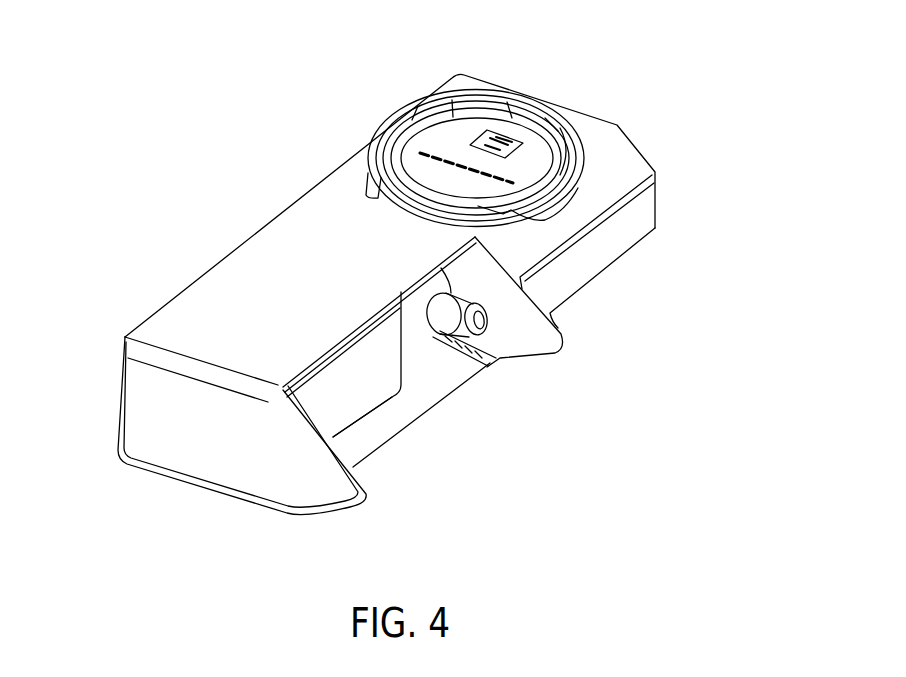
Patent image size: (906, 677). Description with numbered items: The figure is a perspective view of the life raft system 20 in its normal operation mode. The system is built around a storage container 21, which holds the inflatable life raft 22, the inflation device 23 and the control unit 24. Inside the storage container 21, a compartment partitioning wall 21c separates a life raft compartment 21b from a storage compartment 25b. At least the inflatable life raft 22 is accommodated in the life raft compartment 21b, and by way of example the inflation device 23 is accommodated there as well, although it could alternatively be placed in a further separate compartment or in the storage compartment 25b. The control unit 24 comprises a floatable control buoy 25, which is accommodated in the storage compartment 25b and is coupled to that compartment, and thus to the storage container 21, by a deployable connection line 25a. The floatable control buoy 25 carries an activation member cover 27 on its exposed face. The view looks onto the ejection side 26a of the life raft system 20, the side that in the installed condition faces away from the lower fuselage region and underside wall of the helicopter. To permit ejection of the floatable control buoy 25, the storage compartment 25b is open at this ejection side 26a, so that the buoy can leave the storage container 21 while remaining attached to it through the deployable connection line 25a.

The life raft system 20 is at (230, 37).
The storage container 21 is at (222, 298).
The life raft compartment 21b is at (428, 396).
The compartment partitioning wall 21c is at (515, 333).
The inflatable life raft 22 is at (358, 390).
The inflation device 23 is at (410, 343).
The control unit 24 is at (404, 130).
The floatable control buoy 25 is at (540, 175).
The deployable connection line 25a is at (378, 194).
The storage compartment 25b is at (539, 113).
The ejection side 26a is at (452, 96).
The activation member cover 27 is at (498, 140).